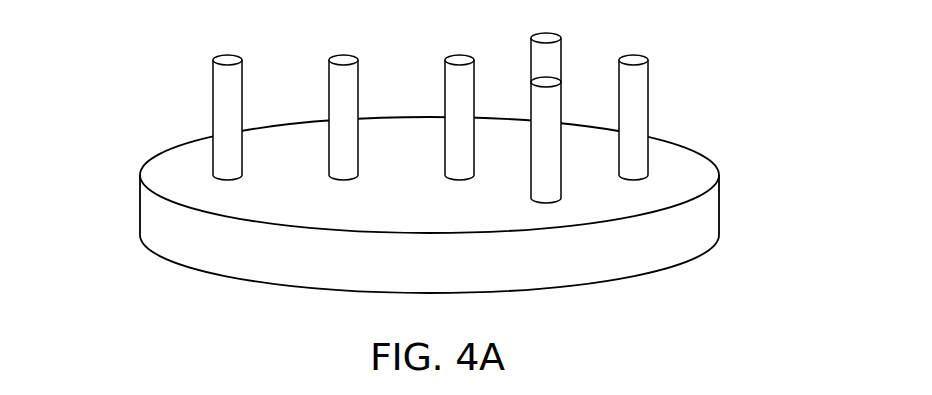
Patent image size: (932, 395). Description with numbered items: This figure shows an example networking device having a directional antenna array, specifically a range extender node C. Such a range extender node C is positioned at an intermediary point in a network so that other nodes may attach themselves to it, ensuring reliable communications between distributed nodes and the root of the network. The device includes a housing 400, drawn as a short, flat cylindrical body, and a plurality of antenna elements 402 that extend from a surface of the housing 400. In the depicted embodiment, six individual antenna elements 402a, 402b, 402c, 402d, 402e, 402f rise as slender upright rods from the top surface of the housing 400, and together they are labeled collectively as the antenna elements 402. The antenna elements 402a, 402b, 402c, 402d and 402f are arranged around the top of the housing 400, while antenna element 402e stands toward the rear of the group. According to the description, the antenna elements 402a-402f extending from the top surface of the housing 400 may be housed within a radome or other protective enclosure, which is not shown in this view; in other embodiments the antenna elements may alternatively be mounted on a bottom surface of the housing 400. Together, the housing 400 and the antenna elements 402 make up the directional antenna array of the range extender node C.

The housing 400 is at (160, 168).
The antenna elements 402 is at (526, 106).
The antenna element 402a is at (634, 57).
The antenna element 402b is at (458, 57).
The antenna element 402c is at (341, 57).
The antenna element 402d is at (226, 57).
The antenna element 402e is at (544, 36).
The antenna element 402f is at (544, 80).
The range extender node C is at (459, 151).